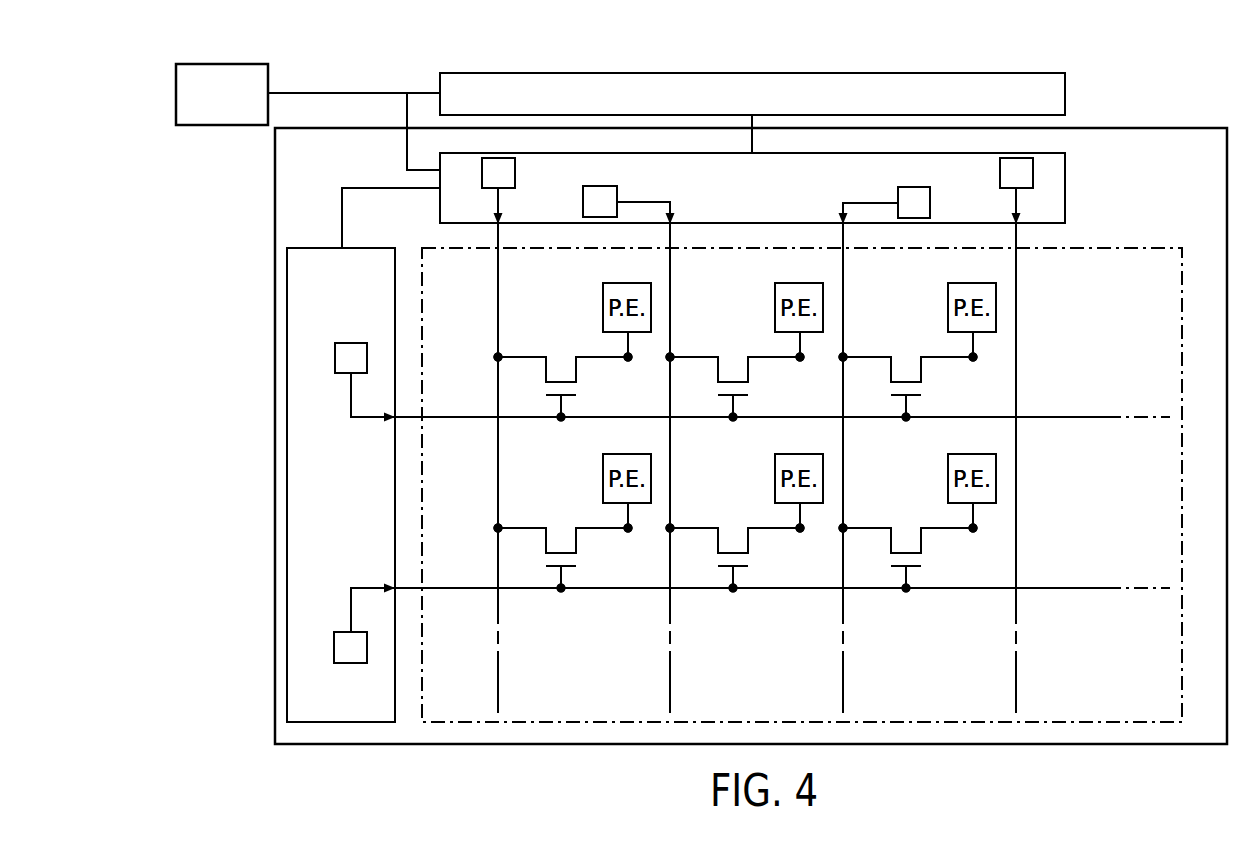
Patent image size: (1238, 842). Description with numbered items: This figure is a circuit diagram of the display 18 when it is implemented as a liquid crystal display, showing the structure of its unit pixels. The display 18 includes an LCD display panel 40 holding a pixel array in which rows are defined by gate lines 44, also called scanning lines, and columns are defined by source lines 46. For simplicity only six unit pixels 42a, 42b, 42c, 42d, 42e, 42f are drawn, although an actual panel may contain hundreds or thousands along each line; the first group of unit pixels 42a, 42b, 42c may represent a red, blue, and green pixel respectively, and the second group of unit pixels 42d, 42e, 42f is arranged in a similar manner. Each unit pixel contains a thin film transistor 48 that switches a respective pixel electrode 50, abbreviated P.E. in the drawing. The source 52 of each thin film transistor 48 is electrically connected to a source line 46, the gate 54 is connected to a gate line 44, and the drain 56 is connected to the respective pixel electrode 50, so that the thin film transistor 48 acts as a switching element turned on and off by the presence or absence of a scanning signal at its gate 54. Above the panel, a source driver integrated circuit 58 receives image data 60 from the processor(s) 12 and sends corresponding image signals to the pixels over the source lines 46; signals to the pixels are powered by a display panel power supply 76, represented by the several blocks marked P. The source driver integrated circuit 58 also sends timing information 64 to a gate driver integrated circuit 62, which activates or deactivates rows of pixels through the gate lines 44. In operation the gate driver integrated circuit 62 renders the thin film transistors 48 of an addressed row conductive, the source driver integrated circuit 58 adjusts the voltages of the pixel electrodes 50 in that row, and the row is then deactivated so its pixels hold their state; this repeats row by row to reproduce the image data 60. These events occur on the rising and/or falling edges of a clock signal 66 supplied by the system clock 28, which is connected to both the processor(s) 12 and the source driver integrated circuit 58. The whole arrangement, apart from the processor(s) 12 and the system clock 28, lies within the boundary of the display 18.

The processor(s) 12 is at (1065, 95).
The display 18 is at (1200, 128).
The system clock 28 is at (223, 64).
The LCD display panel 40 is at (1157, 247).
The unit pixel 42a is at (530, 290).
The unit pixel 42b is at (819, 272).
The unit pixel 42c is at (991, 272).
The unit pixel 42d is at (592, 582).
The unit pixel 42e is at (764, 582).
The unit pixel 42f is at (938, 582).
The gate line 44 is at (463, 419).
The source line 46 is at (500, 684).
The thin film transistor 48 is at (750, 473).
The pixel electrode 50 is at (784, 389).
The source 52 is at (688, 418).
The gate 54 is at (713, 487).
The drain 56 is at (770, 429).
The source driver integrated circuit 58 is at (1065, 190).
The image data 60 is at (748, 135).
The gate driver integrated circuit 62 is at (312, 248).
The timing information 64 is at (390, 188).
The clock signal 66 is at (348, 92).
The display panel power supply 76 is at (583, 200).